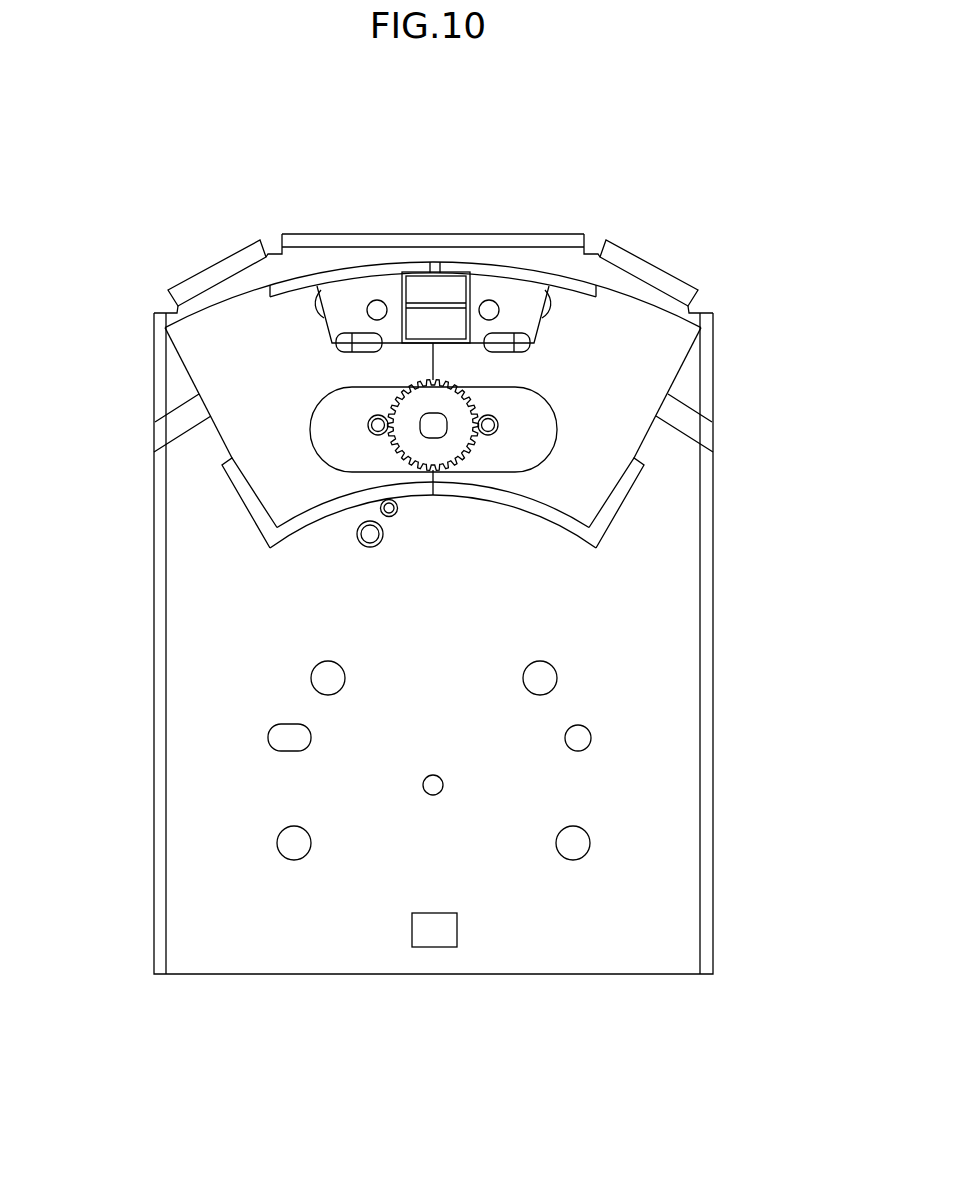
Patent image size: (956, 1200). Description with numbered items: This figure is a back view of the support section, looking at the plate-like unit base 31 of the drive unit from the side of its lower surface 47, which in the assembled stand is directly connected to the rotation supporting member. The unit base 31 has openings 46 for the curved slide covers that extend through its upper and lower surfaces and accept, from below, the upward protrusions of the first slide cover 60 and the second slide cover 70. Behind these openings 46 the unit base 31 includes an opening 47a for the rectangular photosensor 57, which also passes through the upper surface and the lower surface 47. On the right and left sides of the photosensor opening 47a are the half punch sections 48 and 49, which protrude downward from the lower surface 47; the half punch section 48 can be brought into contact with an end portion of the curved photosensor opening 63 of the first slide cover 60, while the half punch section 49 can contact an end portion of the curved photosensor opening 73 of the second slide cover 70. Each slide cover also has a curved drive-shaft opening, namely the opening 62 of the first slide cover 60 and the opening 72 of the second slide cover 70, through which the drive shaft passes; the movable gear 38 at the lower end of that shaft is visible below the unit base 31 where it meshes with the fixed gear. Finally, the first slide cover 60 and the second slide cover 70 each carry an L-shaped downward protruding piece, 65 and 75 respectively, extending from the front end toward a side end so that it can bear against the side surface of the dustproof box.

The unit base 31 is at (637, 982).
The movable gear 38 is at (408, 400).
The openings for curved slide cover 46 is at (182, 418).
The lower surface 47 is at (340, 918).
The opening for rectangular photosensor 47a is at (470, 290).
The half punch section 48 is at (490, 300).
The half punch section 49 is at (378, 300).
The photosensor 57 is at (420, 283).
The first slide cover 60 is at (677, 323).
The curved drive-shaft opening 62 is at (537, 440).
The curved photosensor opening 63 is at (547, 300).
The downward protruding piece 65 is at (547, 520).
The second slide cover 70 is at (201, 352).
The curved drive-shaft opening 72 is at (328, 441).
The curved photosensor opening 73 is at (325, 300).
The downward protruding piece 75 is at (312, 520).